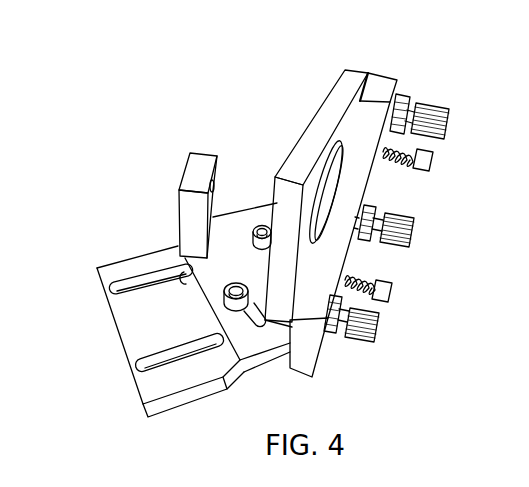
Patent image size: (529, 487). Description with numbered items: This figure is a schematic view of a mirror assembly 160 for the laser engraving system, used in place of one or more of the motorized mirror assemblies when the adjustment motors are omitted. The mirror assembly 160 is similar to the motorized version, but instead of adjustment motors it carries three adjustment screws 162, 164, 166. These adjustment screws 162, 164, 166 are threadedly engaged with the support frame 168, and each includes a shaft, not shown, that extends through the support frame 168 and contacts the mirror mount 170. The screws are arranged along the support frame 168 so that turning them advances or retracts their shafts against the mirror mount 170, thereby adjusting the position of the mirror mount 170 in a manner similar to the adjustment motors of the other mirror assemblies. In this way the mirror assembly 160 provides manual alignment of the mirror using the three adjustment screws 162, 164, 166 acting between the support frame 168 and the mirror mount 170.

The mirror assembly 160 is at (104, 182).
The adjustment screw 162 is at (378, 342).
The adjustment screw 164 is at (404, 250).
The adjustment screw 166 is at (436, 144).
The support frame 168 is at (380, 83).
The mirror mount 170 is at (346, 69).